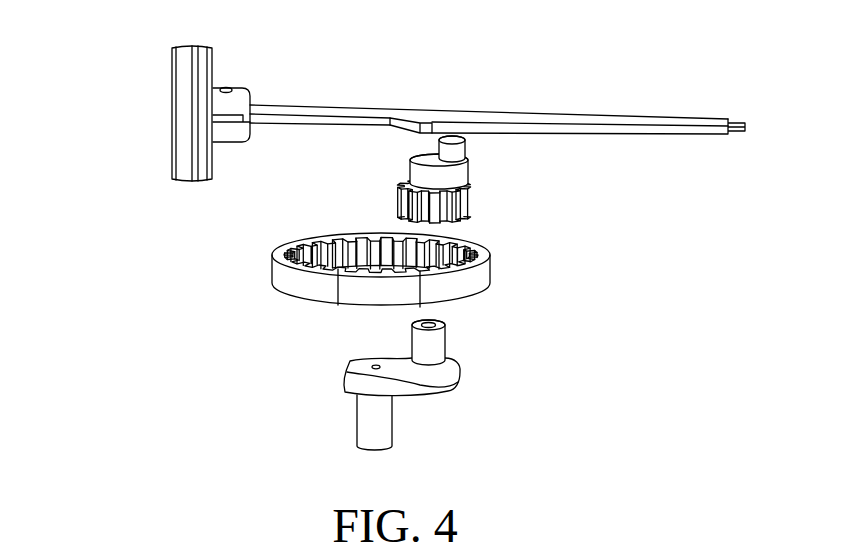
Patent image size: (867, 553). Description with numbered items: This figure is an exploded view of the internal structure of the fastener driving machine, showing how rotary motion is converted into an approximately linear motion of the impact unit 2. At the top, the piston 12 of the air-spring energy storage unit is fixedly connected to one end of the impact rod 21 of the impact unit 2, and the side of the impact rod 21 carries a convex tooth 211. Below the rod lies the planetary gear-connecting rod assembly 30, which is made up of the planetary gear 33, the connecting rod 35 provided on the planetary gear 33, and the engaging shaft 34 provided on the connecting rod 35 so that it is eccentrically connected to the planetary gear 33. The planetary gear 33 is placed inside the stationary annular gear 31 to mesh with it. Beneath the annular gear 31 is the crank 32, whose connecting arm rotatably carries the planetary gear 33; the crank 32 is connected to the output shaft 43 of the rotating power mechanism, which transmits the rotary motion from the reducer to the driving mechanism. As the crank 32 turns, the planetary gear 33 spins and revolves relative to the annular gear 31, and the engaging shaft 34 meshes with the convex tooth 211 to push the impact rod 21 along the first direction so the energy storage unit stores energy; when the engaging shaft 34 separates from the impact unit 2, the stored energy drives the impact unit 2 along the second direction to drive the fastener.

The piston 12 is at (193, 73).
The impact unit 2 is at (479, 96).
The impact rod 21 is at (497, 92).
The convex tooth 211 is at (421, 121).
The planetary gear-connecting rod assembly 30 is at (502, 185).
The planetary gear 33 is at (466, 200).
The engaging shaft 34 is at (455, 145).
The connecting rod 35 is at (457, 171).
The annular gear 31 is at (482, 277).
The crank 32 is at (460, 378).
The output shaft 43 is at (392, 423).